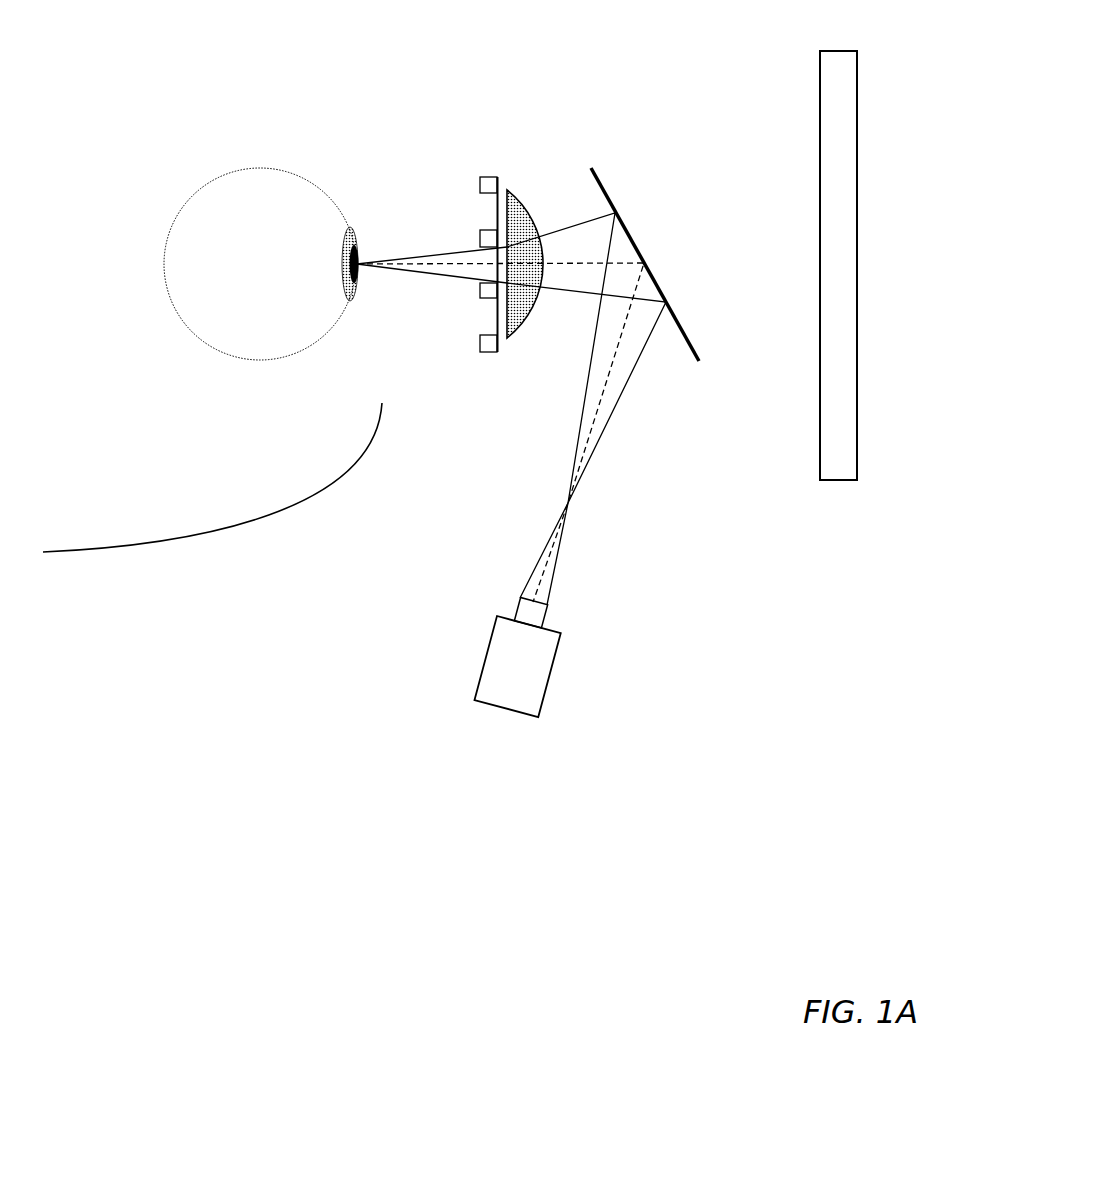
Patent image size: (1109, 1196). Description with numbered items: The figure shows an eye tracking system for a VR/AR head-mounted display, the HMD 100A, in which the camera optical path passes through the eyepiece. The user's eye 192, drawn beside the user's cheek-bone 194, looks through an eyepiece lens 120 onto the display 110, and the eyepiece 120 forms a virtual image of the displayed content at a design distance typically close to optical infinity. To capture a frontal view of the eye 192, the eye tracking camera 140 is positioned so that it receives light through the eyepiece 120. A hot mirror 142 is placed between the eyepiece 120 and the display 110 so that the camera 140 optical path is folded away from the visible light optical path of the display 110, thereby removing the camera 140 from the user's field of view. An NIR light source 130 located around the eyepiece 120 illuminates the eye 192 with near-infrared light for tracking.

The HMD 100A is at (833, 625).
The display 110 is at (857, 127).
The eyepiece lens 120 is at (535, 217).
The NIR light source 130 is at (481, 189).
The eye tracking camera 140 is at (513, 711).
The hot mirror 142 is at (645, 253).
The eye 192 is at (180, 217).
The cheek-bone 194 is at (287, 509).